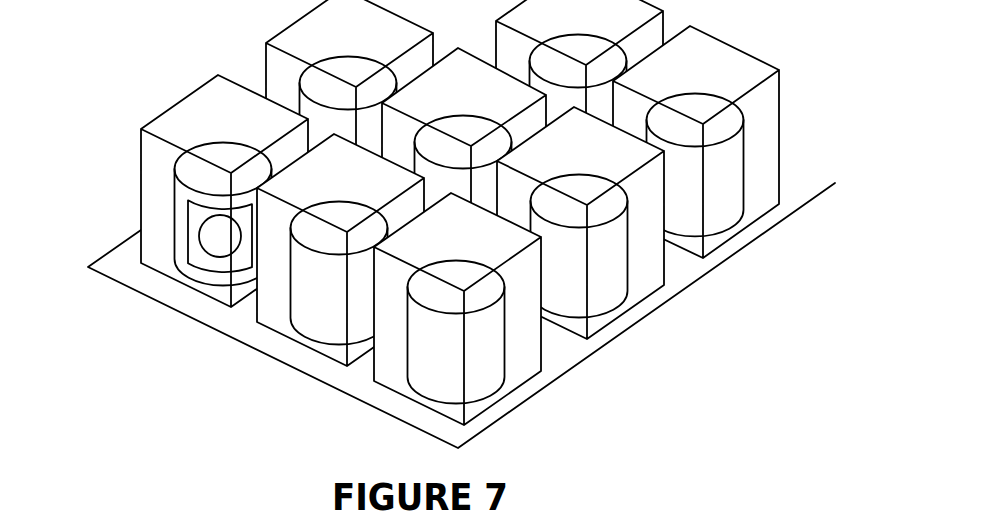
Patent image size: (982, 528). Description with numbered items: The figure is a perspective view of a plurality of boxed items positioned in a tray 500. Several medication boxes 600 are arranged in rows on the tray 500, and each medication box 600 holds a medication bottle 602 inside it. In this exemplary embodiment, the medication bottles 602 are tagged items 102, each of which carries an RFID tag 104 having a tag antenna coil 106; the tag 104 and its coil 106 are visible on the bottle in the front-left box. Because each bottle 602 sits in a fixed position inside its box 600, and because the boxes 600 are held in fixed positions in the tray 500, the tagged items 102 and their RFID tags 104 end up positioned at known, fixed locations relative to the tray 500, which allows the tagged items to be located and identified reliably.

The tagged item 102 is at (488, 338).
The RFID tag 104 is at (187, 215).
The tag antenna coil 106 is at (205, 253).
The tray 500 is at (238, 323).
The medication box 600 is at (168, 110).
The medication bottle 602 is at (612, 268).